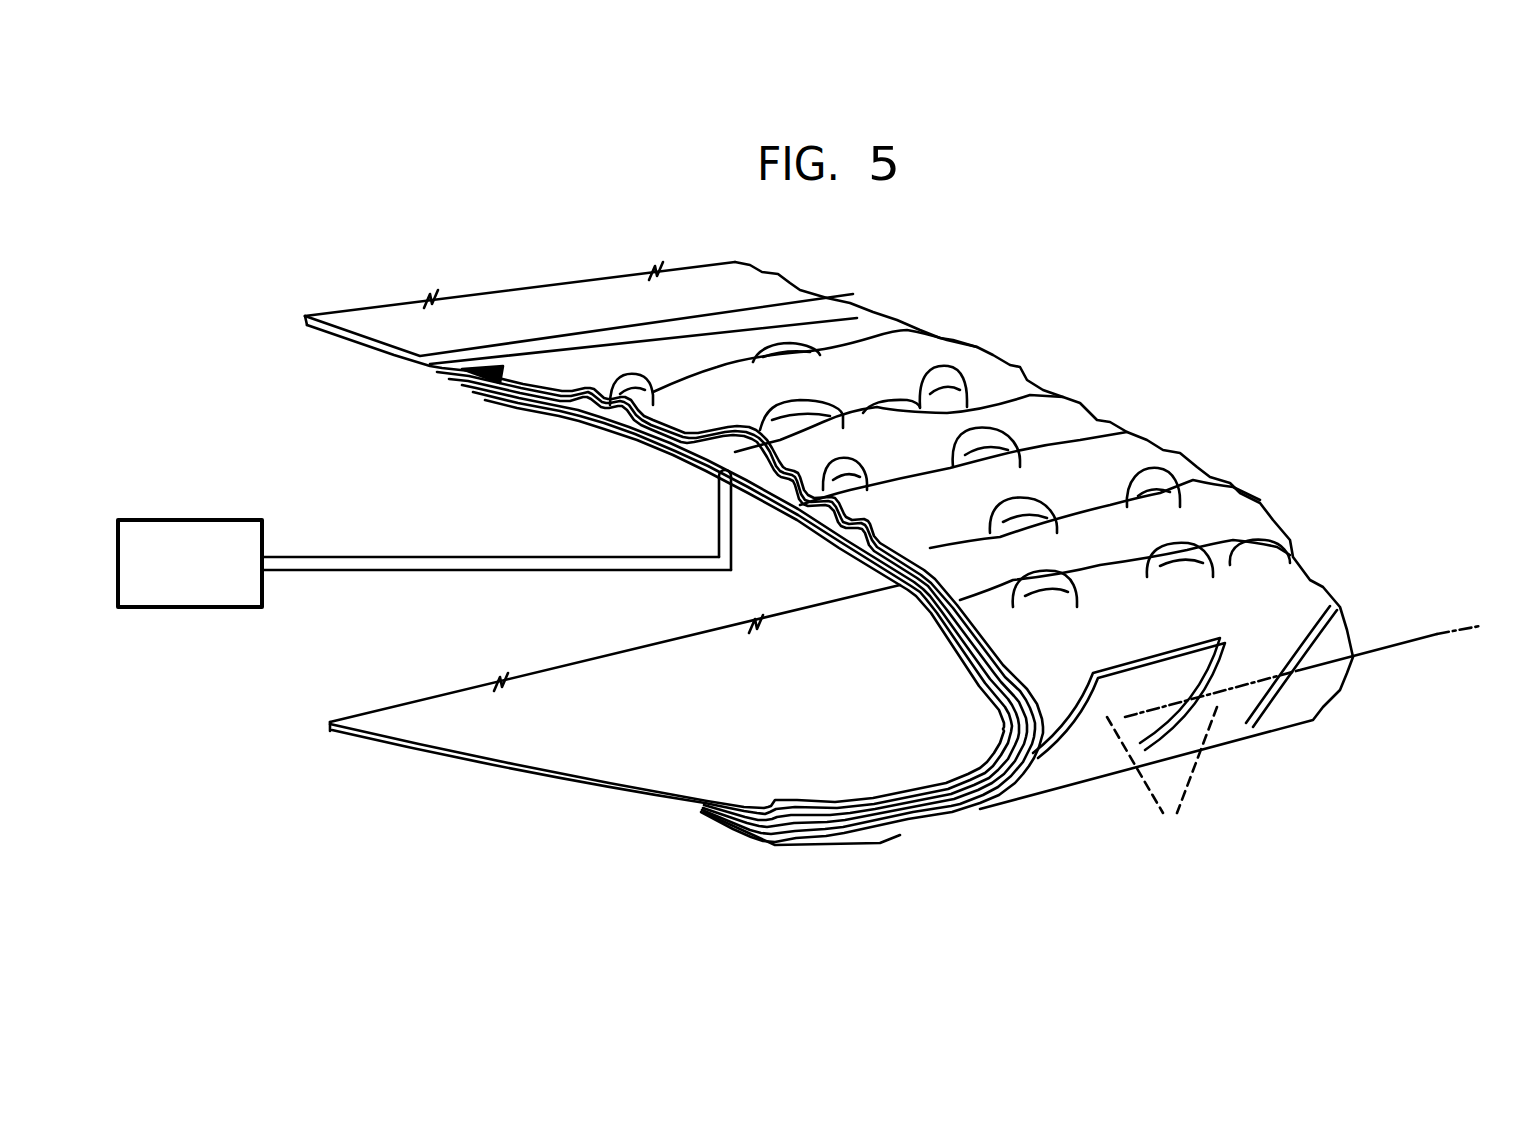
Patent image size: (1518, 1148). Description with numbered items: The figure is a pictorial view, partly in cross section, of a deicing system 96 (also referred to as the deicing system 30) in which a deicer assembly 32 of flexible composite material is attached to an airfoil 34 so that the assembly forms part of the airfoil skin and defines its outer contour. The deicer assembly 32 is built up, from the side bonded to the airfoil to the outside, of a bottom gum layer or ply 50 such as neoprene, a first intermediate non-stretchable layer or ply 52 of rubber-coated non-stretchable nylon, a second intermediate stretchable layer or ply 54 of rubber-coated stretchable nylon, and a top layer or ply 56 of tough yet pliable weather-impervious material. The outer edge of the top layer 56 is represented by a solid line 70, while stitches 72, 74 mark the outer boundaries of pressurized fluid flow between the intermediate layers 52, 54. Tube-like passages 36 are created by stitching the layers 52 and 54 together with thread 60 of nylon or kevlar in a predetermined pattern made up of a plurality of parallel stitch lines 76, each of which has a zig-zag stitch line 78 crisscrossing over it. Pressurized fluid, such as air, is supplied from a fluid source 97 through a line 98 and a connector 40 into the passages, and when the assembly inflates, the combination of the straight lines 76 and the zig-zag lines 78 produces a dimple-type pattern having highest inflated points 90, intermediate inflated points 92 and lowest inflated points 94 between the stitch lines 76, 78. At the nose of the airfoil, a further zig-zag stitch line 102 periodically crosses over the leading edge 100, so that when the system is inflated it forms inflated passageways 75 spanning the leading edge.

The deicing system 30 is at (1120, 400).
The deicer assembly 32 is at (1240, 507).
The airfoil skin 34 is at (516, 303).
The tube-like passages 36 is at (627, 430).
The connector 40 is at (713, 487).
The bottom layer or ply 50 is at (482, 392).
The first intermediate non-stretchable layer or ply 52 is at (517, 400).
The second intermediate stretchable layer or ply 54 is at (917, 570).
The top layer or ply 56 is at (903, 845).
The thread 60 is at (967, 623).
The solid line 70 is at (750, 825).
The stitches 72 is at (860, 837).
The stitches 74 is at (830, 840).
The inflated passageways 75 is at (1162, 776).
The parallel stitch lines 76 is at (573, 413).
The zig-zag stitch line 78 is at (590, 433).
The highest inflated points 90 is at (872, 353).
The intermediate inflated points 92 is at (643, 417).
The lowest inflated points 94 is at (672, 427).
The deicing system 96 is at (1003, 303).
The fluid source 97 is at (192, 523).
The line 98 is at (347, 565).
The leading edge 100 is at (1393, 643).
The zig-zag stitch line 102 is at (1013, 753).